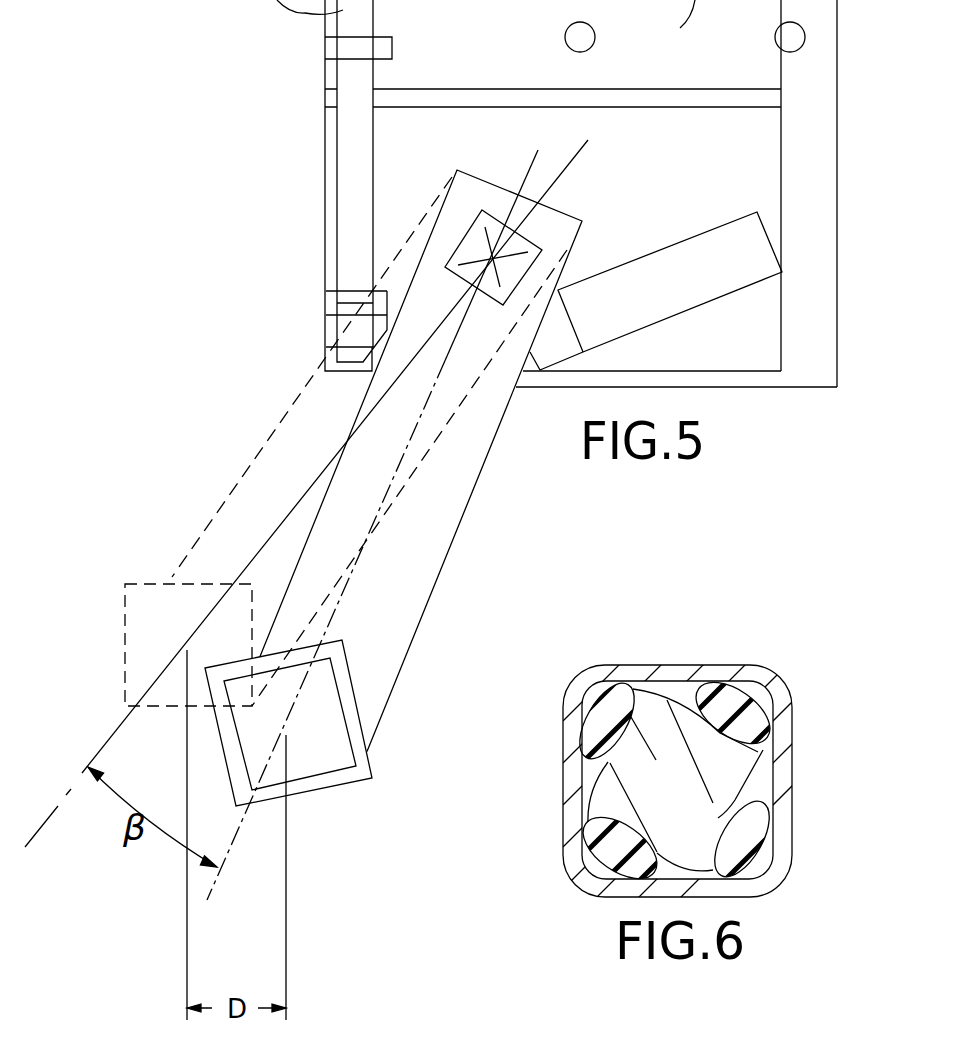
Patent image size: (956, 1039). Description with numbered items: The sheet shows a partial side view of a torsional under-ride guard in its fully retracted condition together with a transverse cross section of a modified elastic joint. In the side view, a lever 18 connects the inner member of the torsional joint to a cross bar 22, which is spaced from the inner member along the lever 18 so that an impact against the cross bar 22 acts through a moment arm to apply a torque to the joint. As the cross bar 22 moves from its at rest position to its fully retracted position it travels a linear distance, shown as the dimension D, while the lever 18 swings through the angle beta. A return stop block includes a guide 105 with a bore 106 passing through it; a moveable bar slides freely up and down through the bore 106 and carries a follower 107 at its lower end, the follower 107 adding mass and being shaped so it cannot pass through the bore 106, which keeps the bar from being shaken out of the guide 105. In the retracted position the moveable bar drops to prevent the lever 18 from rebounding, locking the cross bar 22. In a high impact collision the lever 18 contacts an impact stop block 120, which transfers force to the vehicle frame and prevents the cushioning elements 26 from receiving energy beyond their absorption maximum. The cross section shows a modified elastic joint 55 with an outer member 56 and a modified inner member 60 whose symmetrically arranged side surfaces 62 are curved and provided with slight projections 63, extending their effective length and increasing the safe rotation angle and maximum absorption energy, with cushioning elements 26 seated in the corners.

In FIG. 5, the lever 18 is at (400, 577).
In FIG. 5, the cross bar 22 is at (320, 753).
In FIG. 6, the cushioning element 26 is at (757, 713).
In FIG. 6, the modified elastic joint 55 is at (802, 788).
In FIG. 6, the outer member 56 is at (572, 730).
In FIG. 6, the modified inner member 60 is at (692, 795).
In FIG. 6, the side surface 62 is at (690, 686).
In FIG. 6, the projection 63 is at (638, 687).
In FIG. 5, the guide 105 is at (383, 48).
In FIG. 5, the bore 106 is at (345, 50).
In FIG. 5, the follower 107 is at (345, 335).
In FIG. 5, the impact stop block 120 is at (683, 282).